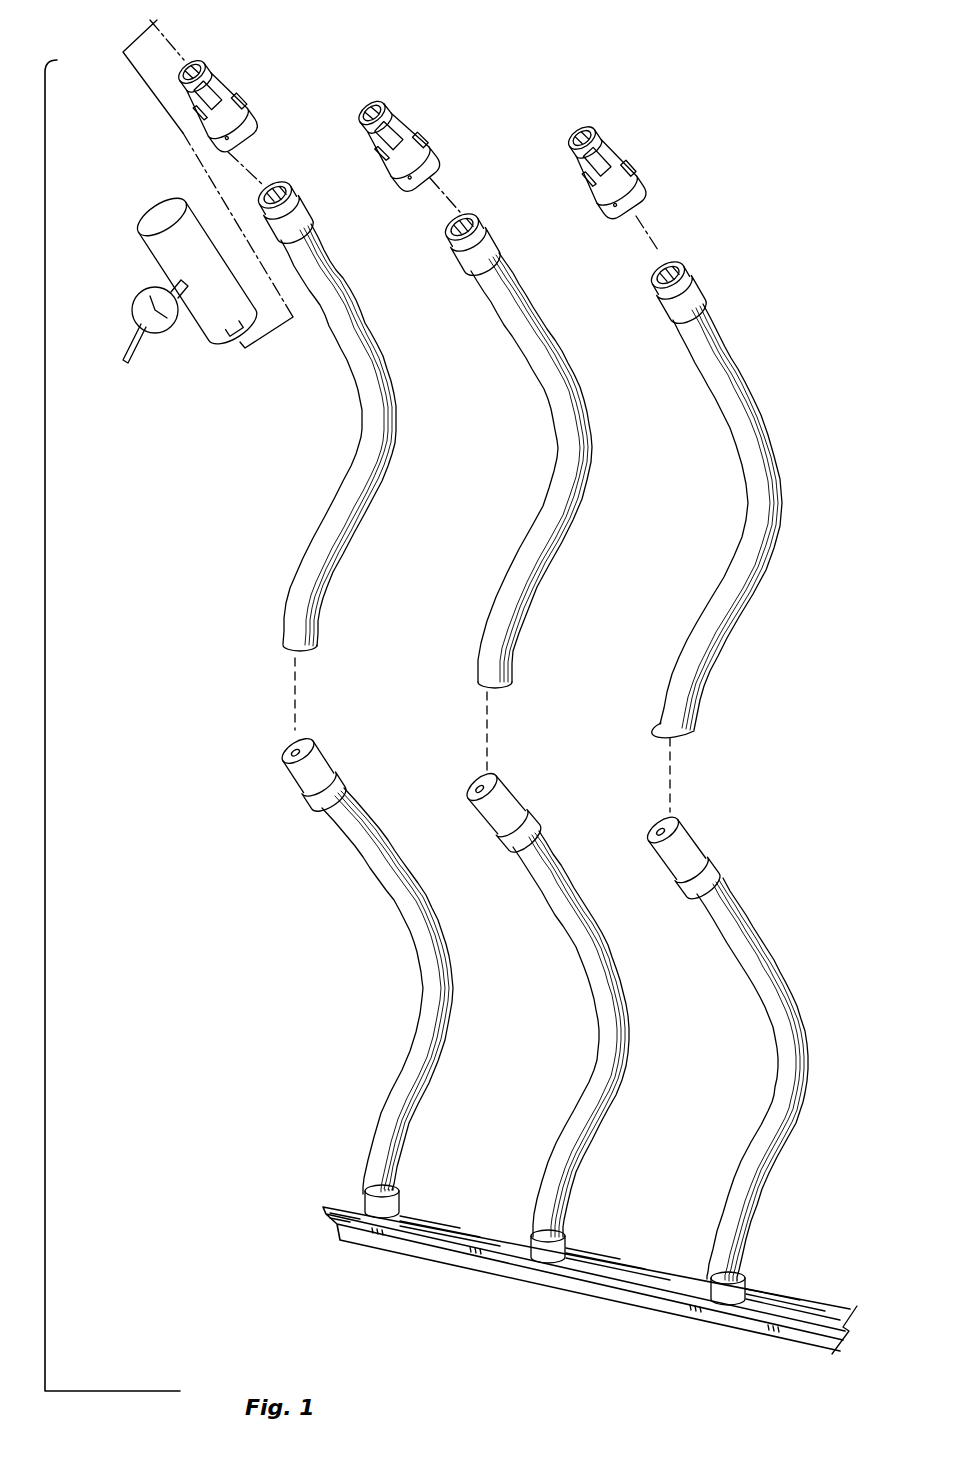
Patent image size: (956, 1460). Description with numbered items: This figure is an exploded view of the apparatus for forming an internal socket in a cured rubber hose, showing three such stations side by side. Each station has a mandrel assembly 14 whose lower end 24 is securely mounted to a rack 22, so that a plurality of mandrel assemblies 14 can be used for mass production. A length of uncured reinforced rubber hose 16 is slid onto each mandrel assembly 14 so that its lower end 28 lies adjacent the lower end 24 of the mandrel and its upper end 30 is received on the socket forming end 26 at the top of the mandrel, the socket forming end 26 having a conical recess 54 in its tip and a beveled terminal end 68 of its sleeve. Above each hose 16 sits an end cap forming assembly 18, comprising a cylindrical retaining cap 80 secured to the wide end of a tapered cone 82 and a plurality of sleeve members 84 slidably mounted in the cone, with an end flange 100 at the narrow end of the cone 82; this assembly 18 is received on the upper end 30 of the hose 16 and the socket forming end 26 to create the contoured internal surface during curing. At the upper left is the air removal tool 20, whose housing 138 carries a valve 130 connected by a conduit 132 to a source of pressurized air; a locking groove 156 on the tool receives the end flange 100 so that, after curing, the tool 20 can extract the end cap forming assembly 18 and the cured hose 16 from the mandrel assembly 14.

The mandrel assembly 14 is at (405, 979).
The length of uncured reinforced rubber hose 16 is at (356, 418).
The end cap forming assembly 18 is at (252, 94).
The air removal tool 20 is at (176, 285).
The rack 22 is at (493, 1258).
The lower end of the mandrel assembly 24 is at (395, 1195).
The socket forming end 26 is at (300, 764).
The lower end of the hose 28 is at (322, 642).
The upper end of the hose 30 is at (304, 203).
The conical recess 54 is at (298, 746).
The terminal end of the sleeve 68 is at (331, 777).
The retaining cap 80 is at (254, 128).
The tapered cone 82 is at (394, 160).
The sleeve members 84 is at (213, 93).
The end flange 100 is at (196, 72).
The valve 130 is at (140, 297).
The conduit 132 is at (125, 338).
The air removal tool housing 138 is at (160, 250).
The locking groove 156 is at (217, 348).